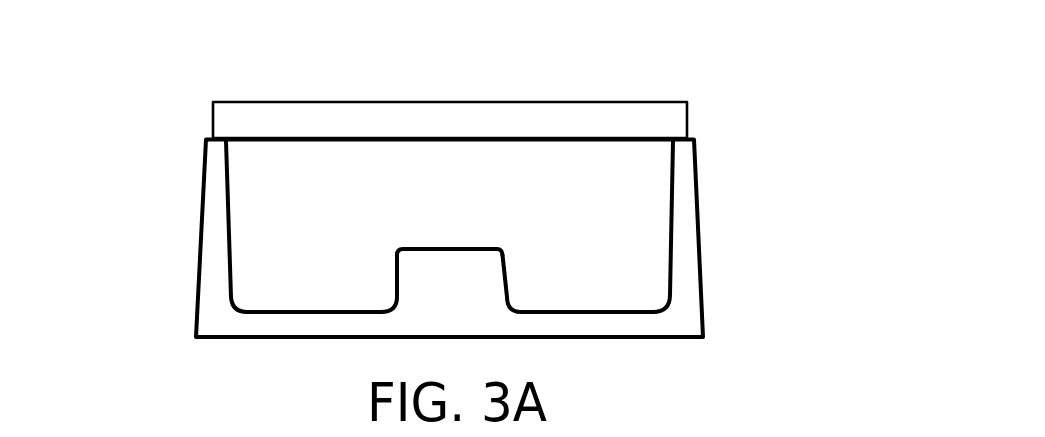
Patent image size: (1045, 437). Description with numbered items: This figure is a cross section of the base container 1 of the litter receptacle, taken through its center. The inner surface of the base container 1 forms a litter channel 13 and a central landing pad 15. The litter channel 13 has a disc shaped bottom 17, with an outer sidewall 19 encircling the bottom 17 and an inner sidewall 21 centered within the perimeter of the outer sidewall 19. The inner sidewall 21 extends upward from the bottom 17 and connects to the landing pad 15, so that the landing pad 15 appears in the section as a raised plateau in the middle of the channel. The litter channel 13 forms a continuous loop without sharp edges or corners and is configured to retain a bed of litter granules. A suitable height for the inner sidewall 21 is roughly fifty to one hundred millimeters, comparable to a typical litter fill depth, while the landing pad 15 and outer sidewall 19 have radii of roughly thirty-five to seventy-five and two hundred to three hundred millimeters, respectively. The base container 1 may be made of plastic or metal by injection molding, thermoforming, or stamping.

The base container 1 is at (180, 298).
The litter channel 13 is at (617, 272).
The landing pad 15 is at (449, 247).
The bottom 17 is at (347, 310).
The outer sidewall 19 is at (232, 192).
The inner sidewall 21 is at (507, 252).